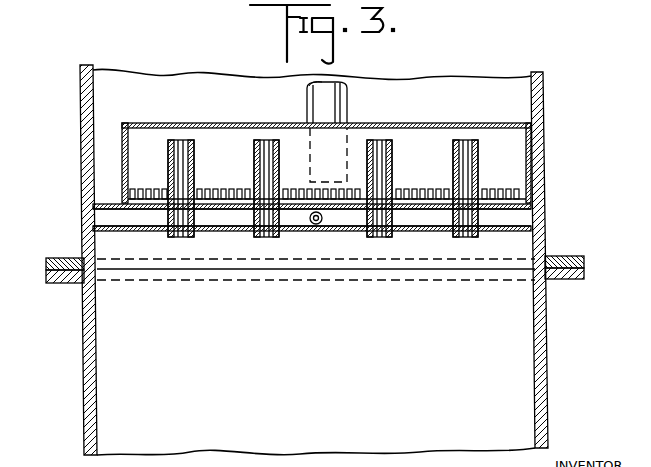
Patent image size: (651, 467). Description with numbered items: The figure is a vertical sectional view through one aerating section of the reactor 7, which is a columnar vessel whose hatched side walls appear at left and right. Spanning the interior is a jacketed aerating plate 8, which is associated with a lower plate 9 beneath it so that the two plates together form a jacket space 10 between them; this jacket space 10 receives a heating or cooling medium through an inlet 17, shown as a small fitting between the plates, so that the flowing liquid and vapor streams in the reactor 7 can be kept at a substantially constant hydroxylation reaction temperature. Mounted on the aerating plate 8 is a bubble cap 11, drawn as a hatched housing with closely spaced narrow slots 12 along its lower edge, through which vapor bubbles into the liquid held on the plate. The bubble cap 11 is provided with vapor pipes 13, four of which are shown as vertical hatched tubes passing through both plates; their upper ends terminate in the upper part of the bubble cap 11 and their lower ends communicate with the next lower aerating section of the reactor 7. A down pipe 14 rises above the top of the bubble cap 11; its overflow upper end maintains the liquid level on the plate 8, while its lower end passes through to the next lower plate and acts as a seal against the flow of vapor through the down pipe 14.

The reactor 7 is at (543, 98).
The aerating plate 8 is at (103, 205).
The lower plate 9 is at (117, 232).
The jacket space 10 is at (103, 219).
The bubble cap 11 is at (210, 123).
The slot 12 is at (230, 187).
The vapor pipe 13 is at (254, 145).
The down pipe 14 is at (347, 101).
The inlet 17 is at (314, 224).